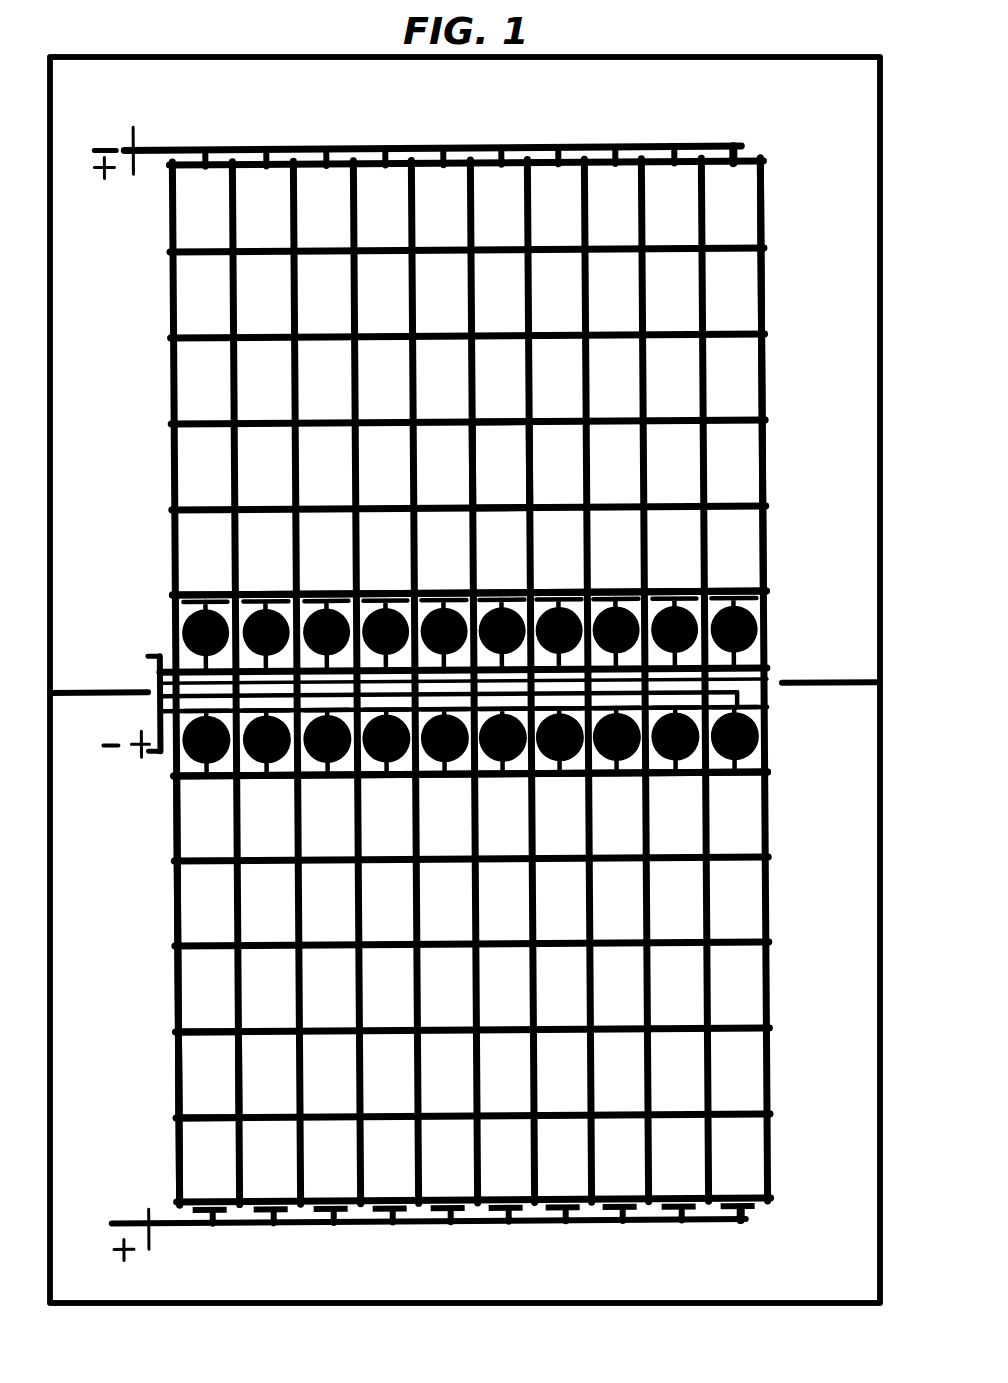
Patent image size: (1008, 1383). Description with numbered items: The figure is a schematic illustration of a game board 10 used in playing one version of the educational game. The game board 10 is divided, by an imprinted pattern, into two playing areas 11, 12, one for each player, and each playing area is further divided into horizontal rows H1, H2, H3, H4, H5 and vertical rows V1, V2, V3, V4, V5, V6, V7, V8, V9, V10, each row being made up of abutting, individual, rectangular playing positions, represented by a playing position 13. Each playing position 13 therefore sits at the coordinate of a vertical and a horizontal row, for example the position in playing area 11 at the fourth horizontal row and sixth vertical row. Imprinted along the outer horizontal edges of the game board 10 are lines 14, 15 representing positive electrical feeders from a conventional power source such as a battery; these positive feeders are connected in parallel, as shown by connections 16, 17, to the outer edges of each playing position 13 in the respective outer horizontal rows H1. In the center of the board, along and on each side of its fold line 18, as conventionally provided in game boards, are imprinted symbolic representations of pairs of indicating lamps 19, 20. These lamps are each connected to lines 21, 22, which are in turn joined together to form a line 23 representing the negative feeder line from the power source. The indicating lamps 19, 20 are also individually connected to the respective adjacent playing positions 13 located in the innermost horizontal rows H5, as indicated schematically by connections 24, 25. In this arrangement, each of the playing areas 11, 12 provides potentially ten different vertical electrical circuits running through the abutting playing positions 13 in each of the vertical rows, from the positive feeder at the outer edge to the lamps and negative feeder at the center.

The game board 10 is at (846, 574).
The playing area 11 is at (770, 390).
The playing area 12 is at (173, 997).
The playing position 13 is at (495, 490).
The line representing positive electrical feeder 14 is at (154, 1230).
The line representing positive electrical feeder 15 is at (167, 112).
The parallel connection of positive feeder 16 is at (752, 1206).
The parallel connection of positive feeder 17 is at (742, 151).
The fold line 18 is at (816, 684).
The indicating lamps 19 is at (198, 612).
The indicating lamps 20 is at (764, 726).
The line 21 is at (160, 656).
The line 22 is at (170, 750).
The negative feeder line 23 is at (158, 727).
The connection of indicating lamps to playing positions 24 is at (178, 594).
The connection of indicating lamps to playing positions 25 is at (742, 776).
The horizontal row H1 is at (190, 217).
The horizontal row H2 is at (190, 304).
The horizontal row H3 is at (190, 390).
The horizontal row H4 is at (190, 475).
The horizontal row H5 is at (210, 548).
The vertical row V1 is at (203, 186).
The vertical row V2 is at (264, 186).
The vertical row V3 is at (324, 186).
The vertical row V4 is at (383, 186).
The vertical row V5 is at (441, 186).
The vertical row V6 is at (499, 186).
The vertical row V7 is at (556, 186).
The vertical row V8 is at (613, 186).
The vertical row V9 is at (672, 186).
The vertical row V10 is at (731, 186).